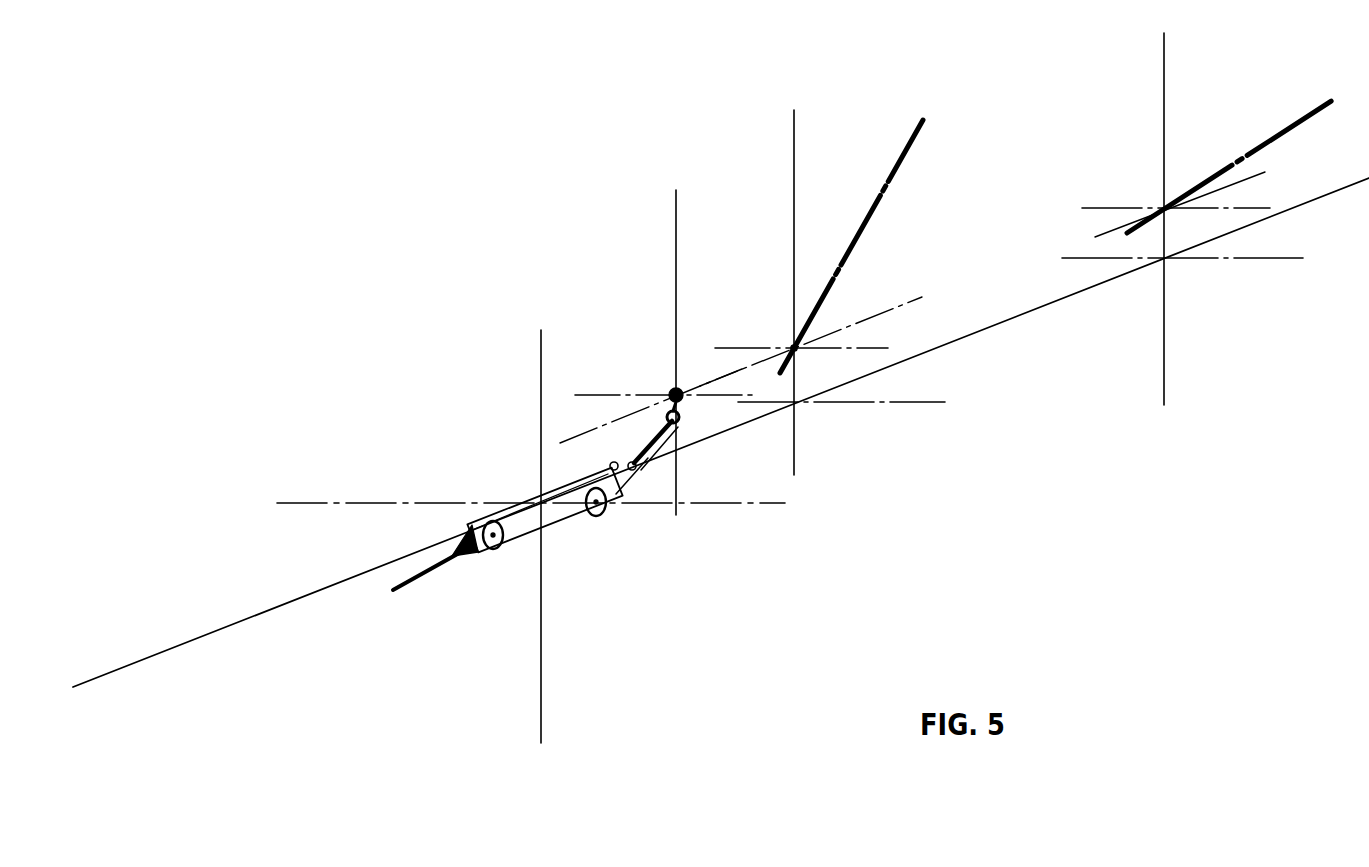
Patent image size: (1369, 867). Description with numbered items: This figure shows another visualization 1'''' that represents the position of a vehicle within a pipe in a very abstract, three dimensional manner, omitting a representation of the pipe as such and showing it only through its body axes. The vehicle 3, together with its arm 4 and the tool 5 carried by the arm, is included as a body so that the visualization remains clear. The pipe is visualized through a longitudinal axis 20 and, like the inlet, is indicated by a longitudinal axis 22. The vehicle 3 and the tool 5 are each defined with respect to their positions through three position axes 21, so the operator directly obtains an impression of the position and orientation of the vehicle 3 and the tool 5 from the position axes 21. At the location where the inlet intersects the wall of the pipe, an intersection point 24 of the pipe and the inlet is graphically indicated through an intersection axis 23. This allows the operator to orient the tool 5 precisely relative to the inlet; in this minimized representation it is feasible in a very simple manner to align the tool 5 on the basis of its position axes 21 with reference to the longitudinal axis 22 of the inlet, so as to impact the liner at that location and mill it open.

The visualization 1'''' is at (413, 144).
The vehicle 3 is at (576, 540).
The arm 4 is at (663, 470).
The tool 5 is at (659, 383).
The longitudinal axis 20 is at (260, 613).
The position axis 21 is at (541, 390).
The longitudinal axis 22 is at (902, 150).
The intersection axis 23 is at (877, 348).
The intersection point 24 is at (793, 347).